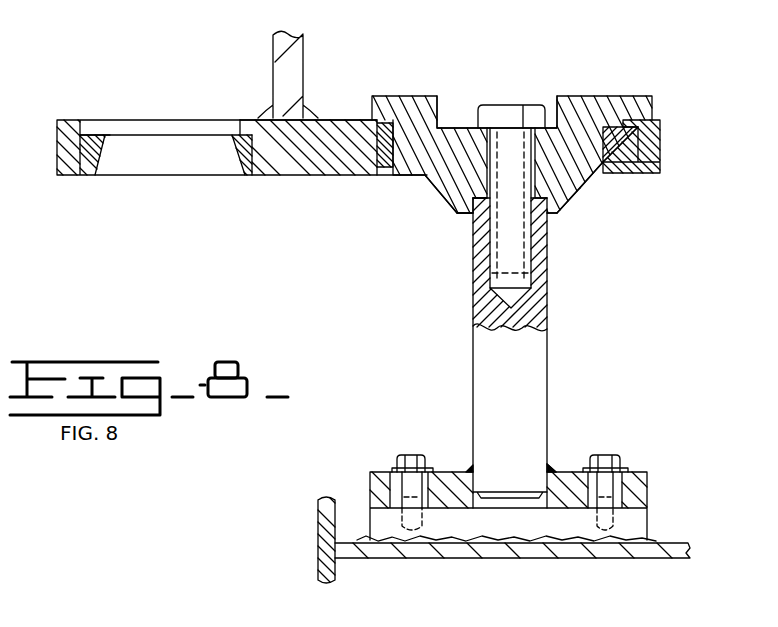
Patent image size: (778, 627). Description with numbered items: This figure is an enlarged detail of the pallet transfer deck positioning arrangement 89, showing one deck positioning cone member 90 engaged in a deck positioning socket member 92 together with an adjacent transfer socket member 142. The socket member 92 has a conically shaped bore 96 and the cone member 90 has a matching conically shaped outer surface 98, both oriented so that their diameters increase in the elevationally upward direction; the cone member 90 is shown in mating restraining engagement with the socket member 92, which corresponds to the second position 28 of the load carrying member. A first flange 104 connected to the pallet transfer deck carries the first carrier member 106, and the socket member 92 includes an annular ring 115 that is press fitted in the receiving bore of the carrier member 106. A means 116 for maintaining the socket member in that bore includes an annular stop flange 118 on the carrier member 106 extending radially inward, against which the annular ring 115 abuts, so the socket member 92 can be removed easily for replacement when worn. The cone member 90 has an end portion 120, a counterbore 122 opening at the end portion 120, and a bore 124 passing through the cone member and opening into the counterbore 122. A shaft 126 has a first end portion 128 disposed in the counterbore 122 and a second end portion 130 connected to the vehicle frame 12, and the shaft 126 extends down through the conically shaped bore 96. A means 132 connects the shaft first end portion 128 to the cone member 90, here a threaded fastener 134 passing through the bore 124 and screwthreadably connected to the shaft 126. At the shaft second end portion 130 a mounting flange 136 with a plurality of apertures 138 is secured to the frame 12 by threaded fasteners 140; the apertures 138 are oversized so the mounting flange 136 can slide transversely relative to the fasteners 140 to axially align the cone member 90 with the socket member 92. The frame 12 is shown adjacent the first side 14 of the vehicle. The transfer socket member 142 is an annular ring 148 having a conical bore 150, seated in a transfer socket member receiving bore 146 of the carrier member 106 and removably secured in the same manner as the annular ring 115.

The frame 12 is at (685, 545).
The first side 14 is at (318, 528).
The second position 28 is at (128, 55).
The pallet transfer deck positioning arrangement 89 is at (690, 282).
The deck positioning cone member 90 is at (662, 93).
The deck positioning socket member 92 is at (604, 202).
The conically shaped bore 96 is at (427, 177).
The conically shaped outer surface 98 is at (565, 206).
The first flange 104 is at (292, 58).
The first carrier member 106 is at (330, 130).
The annular ring 115 is at (635, 142).
The means for maintaining the socket member 116 is at (678, 232).
The annular stop flange 118 is at (608, 189).
The end portion 120 is at (457, 213).
The counterbore 122 is at (480, 208).
The bore 124 is at (648, 118).
The shaft 126 is at (548, 346).
The first end portion 128 is at (548, 222).
The second end portion 130 is at (538, 478).
The means for connecting 132 is at (556, 77).
The threaded fastener 134 is at (497, 104).
The mounting flange 136 is at (647, 478).
The apertures 138 is at (398, 488).
The threaded fasteners 140 is at (410, 455).
The transfer socket member 142 is at (100, 178).
The transfer socket member receiving bore 146 is at (97, 149).
The annular ring 148 is at (243, 176).
The conical bore 150 is at (100, 143).